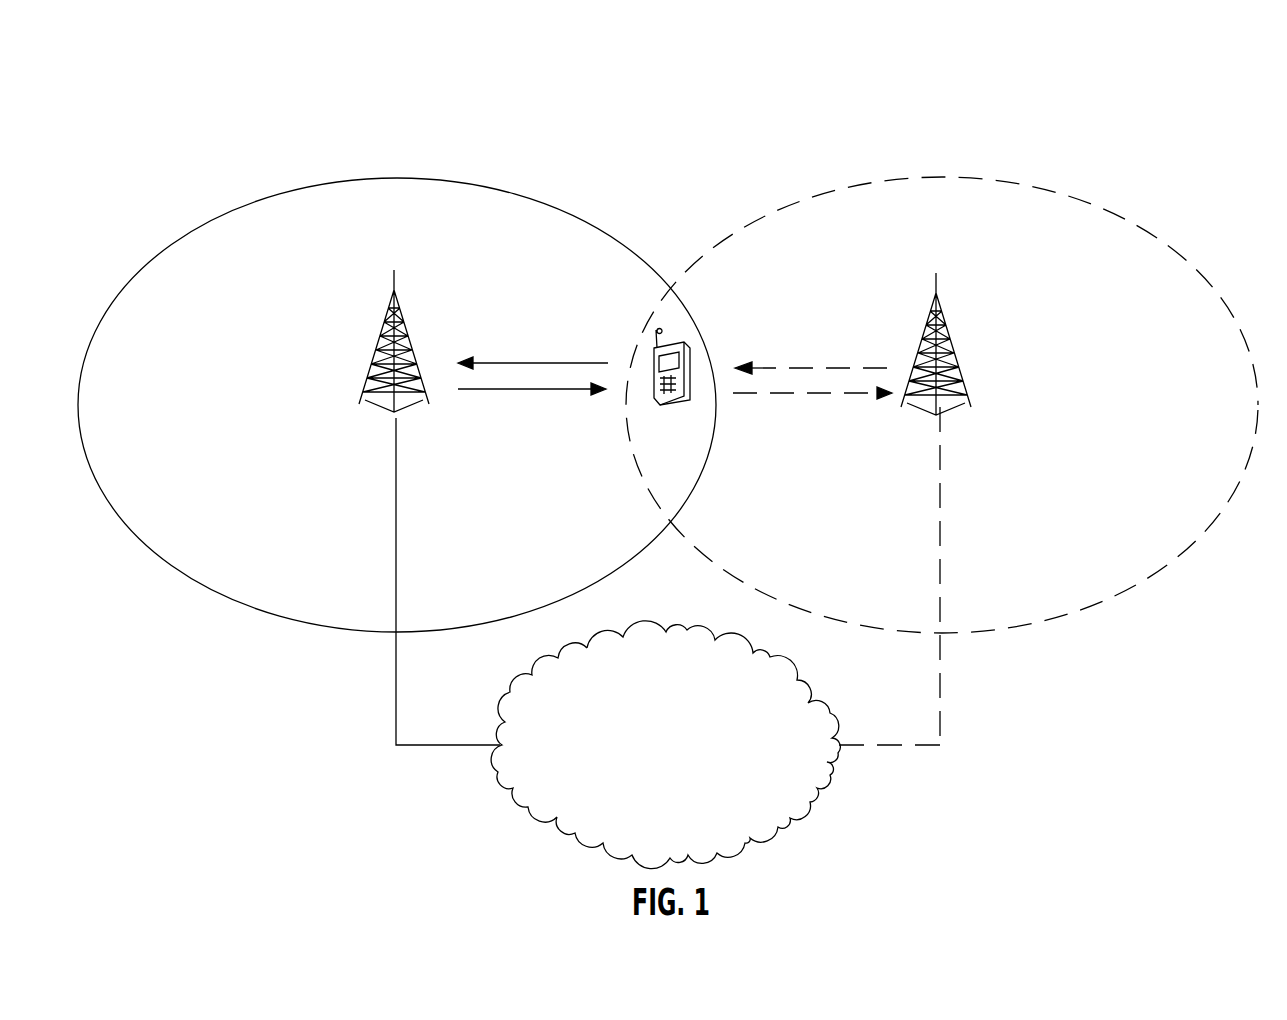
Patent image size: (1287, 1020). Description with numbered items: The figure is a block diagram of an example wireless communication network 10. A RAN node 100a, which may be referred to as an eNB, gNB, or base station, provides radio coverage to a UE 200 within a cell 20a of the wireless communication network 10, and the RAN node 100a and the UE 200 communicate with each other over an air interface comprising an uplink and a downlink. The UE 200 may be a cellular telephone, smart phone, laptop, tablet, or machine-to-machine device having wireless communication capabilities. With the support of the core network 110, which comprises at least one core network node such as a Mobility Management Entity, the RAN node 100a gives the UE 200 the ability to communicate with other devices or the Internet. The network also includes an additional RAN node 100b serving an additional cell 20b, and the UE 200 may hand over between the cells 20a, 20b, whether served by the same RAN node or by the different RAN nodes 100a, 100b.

The wireless communication network 10 is at (925, 78).
The cell 20a is at (415, 178).
The cell 20b is at (958, 180).
The RAN node 100a is at (399, 290).
The RAN node 100b is at (941, 293).
The core network 110 is at (665, 745).
The UE 200 is at (664, 405).